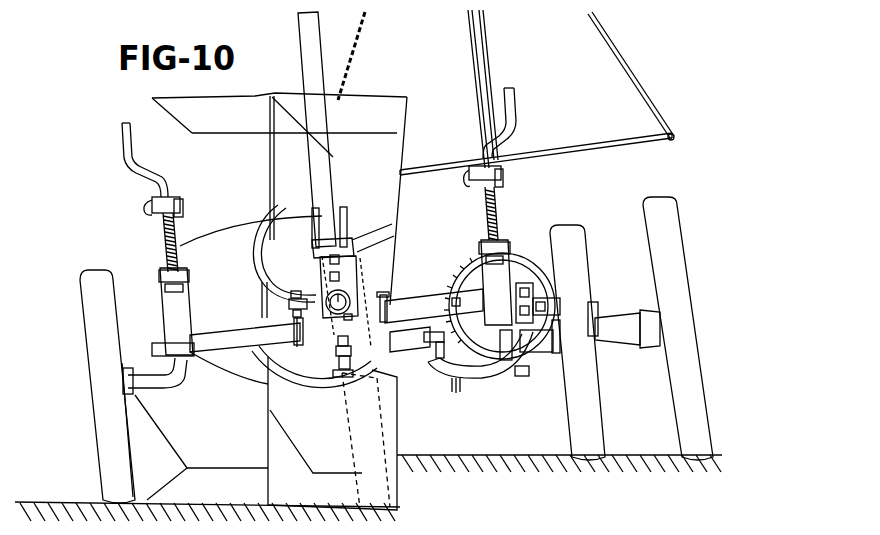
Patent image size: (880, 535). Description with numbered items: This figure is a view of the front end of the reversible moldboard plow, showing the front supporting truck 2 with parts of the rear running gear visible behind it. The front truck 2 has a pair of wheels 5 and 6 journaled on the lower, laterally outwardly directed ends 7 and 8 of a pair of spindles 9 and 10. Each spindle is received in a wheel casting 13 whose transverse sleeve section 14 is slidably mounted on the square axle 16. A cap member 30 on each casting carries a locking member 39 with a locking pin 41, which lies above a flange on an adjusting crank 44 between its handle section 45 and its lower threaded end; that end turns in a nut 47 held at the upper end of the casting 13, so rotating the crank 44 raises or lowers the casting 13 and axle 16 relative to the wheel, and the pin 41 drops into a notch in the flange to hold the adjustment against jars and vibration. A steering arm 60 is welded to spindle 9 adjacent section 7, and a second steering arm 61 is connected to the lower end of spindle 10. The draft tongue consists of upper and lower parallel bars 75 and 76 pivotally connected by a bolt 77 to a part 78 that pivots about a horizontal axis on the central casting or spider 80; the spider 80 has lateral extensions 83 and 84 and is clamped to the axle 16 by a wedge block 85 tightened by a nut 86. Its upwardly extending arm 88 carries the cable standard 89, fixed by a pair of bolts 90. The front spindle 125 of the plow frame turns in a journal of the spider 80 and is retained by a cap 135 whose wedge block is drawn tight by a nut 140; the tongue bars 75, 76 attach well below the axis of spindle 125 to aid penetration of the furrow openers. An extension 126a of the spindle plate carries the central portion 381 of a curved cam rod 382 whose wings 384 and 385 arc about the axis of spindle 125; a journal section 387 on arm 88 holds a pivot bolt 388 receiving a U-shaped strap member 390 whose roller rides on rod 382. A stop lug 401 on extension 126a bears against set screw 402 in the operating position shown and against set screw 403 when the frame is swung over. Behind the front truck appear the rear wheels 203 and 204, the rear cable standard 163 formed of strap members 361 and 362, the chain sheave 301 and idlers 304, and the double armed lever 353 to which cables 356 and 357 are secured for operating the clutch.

The front supporting truck 2 is at (209, 318).
The wheel 5 is at (576, 236).
The wheel 6 is at (86, 285).
The lower laterally outwardly directed end of spindle 7 is at (537, 368).
The lower laterally outwardly directed end of spindle 8 is at (148, 374).
The spindle 9 is at (483, 212).
The spindle 10 is at (160, 245).
The wheel casting 13 is at (167, 323).
The transverse sleeve section 14 is at (163, 333).
The axle 16 is at (232, 328).
The cap member 30 is at (152, 200).
The locking member 39 is at (178, 198).
The locking pin 41 is at (146, 211).
The adjusting crank 44 is at (176, 234).
The handle section 45 is at (122, 135).
The nut 47 is at (160, 283).
The steering arm 60 is at (520, 376).
The steering arm 61 is at (178, 380).
The upper parallel bar 75 is at (322, 372).
The lower parallel bar 76 is at (341, 386).
The bolt 77 is at (352, 388).
The part 78 is at (355, 374).
The central casting or spider 80 is at (386, 293).
The lateral extension 83 is at (410, 339).
The lateral extension 84 is at (257, 352).
The wedge block 85 is at (337, 345).
The nut 86 is at (343, 342).
The upwardly extending arm 88 is at (370, 250).
The cable standard 89 is at (322, 162).
The bolts 90 is at (329, 258).
The front spindle 125 is at (352, 262).
The extension of plate 126a is at (338, 287).
The cap 135 is at (348, 280).
The nut 140 is at (336, 315).
The cable standard 163 is at (469, 89).
The rear wheel 203 is at (684, 250).
The rear wheel 204 is at (384, 422).
The sheave 301 is at (533, 228).
The idlers 304 is at (476, 384).
The double armed lever 353 is at (588, 141).
The cable 356 is at (352, 43).
The cable 357 is at (616, 50).
The strap member 361 is at (475, 88).
The strap member 362 is at (500, 85).
The central portion 381 is at (290, 291).
The curved rod 382 is at (244, 262).
The wing 384 is at (268, 230).
The wing 385 is at (332, 386).
The journal section 387 is at (333, 253).
The pivot bolt 388 is at (350, 240).
The U-shaped strap member 390 is at (320, 240).
The stop lug 401 is at (289, 300).
The adjusting set screw 402 is at (292, 312).
The adjusting set screw 403 is at (434, 306).